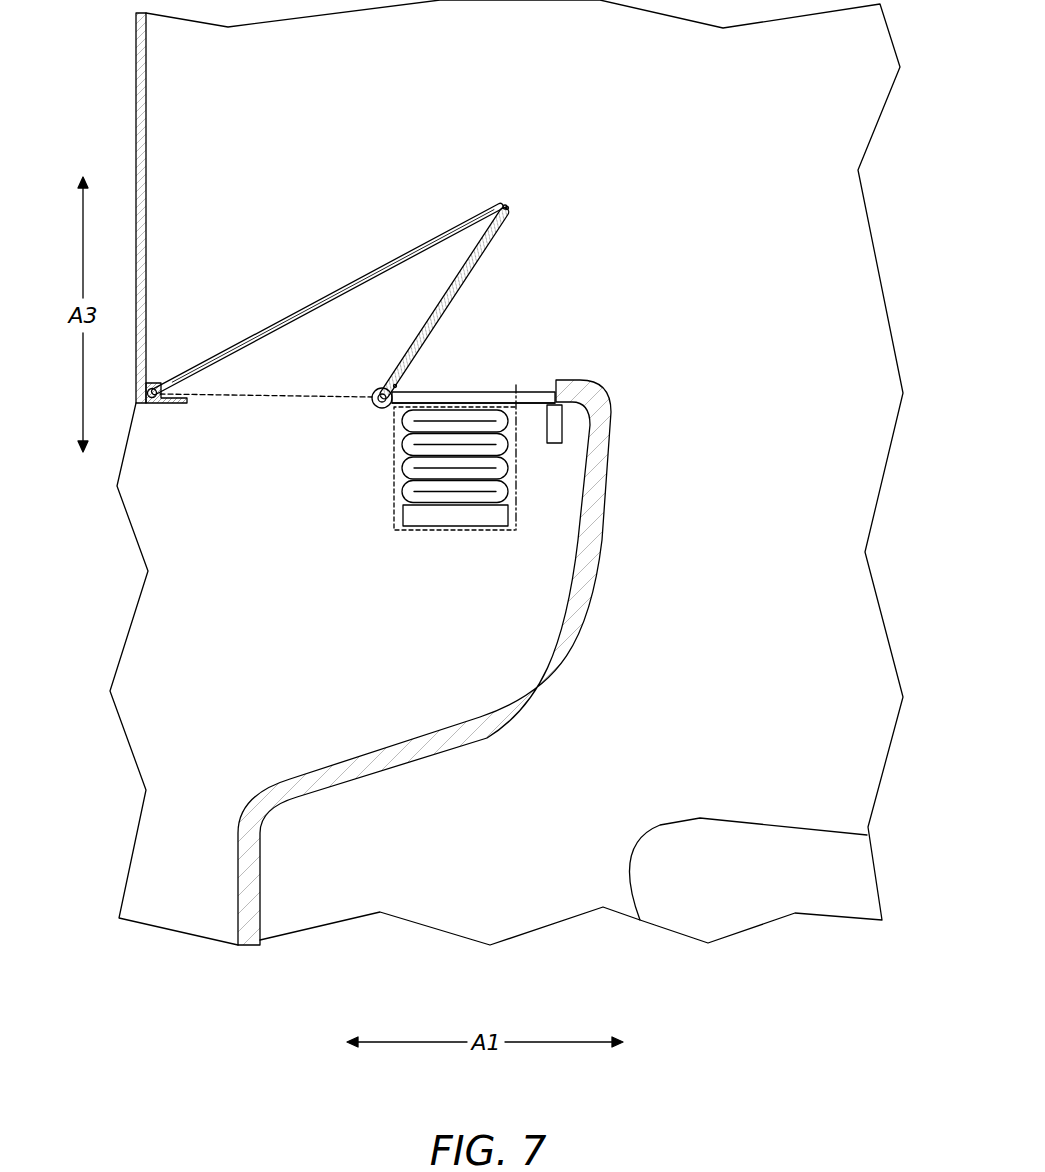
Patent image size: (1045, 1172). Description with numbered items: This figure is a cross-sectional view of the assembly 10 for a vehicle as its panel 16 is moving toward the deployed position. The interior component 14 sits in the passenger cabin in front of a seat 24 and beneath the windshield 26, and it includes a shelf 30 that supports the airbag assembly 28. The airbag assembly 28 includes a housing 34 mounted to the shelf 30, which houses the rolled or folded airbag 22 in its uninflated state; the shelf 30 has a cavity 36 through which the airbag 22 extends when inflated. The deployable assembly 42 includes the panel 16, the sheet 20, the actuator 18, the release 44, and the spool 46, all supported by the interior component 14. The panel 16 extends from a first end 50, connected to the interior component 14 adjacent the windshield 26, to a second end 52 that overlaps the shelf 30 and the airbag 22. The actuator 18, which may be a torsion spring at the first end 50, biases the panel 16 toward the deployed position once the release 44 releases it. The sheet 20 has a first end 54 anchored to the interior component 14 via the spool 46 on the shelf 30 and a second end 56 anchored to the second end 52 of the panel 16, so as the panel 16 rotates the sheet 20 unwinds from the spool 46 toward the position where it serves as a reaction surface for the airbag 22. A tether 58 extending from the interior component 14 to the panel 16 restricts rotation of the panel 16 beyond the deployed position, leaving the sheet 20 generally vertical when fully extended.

The assembly 10 is at (647, 110).
The interior component 14 is at (598, 452).
The panel 16 is at (325, 297).
The actuator 18 is at (183, 405).
The sheet 20 is at (470, 268).
The airbag 22 is at (403, 452).
The seat 24 is at (723, 818).
The windshield 26 is at (146, 175).
The airbag assembly 28 is at (443, 557).
The shelf 30 is at (523, 404).
The housing 34 is at (395, 518).
The cavity 36 is at (481, 391).
The deployable assembly 42 is at (538, 183).
The release 44 is at (553, 445).
The spool 46 is at (372, 401).
The first end 50 is at (158, 382).
The second end 52 is at (507, 200).
The first end 54 is at (397, 387).
The second end 56 is at (509, 207).
The tether 58 is at (228, 350).